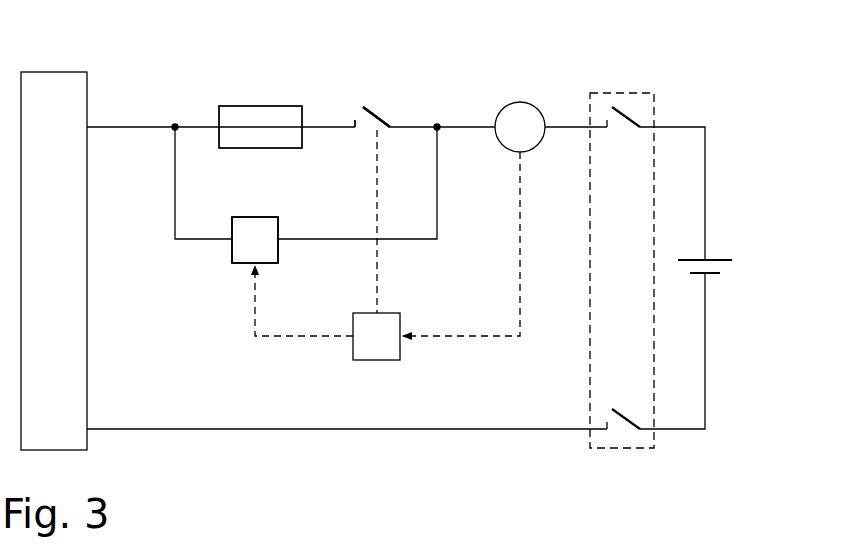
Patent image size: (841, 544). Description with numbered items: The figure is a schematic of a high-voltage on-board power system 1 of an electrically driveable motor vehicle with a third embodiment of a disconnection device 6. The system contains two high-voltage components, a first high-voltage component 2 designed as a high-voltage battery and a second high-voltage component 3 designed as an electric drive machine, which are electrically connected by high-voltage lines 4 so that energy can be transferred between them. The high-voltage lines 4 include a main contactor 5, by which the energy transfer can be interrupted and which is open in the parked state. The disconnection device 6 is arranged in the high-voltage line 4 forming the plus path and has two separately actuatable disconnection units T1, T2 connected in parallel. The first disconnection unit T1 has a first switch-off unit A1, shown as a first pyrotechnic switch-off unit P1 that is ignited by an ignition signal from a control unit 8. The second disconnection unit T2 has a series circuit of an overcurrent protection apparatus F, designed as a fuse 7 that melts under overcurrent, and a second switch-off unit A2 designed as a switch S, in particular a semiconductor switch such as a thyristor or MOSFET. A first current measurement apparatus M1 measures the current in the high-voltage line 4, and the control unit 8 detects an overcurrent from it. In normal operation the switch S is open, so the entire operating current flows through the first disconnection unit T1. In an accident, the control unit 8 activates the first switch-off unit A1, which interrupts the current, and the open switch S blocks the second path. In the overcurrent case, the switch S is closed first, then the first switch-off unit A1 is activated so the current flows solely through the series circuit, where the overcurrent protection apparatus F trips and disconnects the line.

The high-voltage on-board power system 1 is at (714, 94).
The first high-voltage component 2 is at (722, 257).
The second high-voltage component 3 is at (53, 72).
The high-voltage lines 4 is at (676, 125).
The main contactor 5 is at (612, 92).
The disconnection device 6 is at (434, 90).
The fuse 7 is at (259, 106).
The control unit 8 is at (377, 361).
The overcurrent protection apparatus F is at (230, 102).
The first disconnection unit T1 is at (229, 268).
The second disconnection unit T2 is at (327, 92).
The first switch-off unit A1 is at (258, 216).
The second switch-off unit A2 is at (378, 90).
The switch S is at (388, 114).
The first current measurement apparatus M1 is at (474, 219).
The first pyrotechnic switch-off unit P1 is at (306, 195).